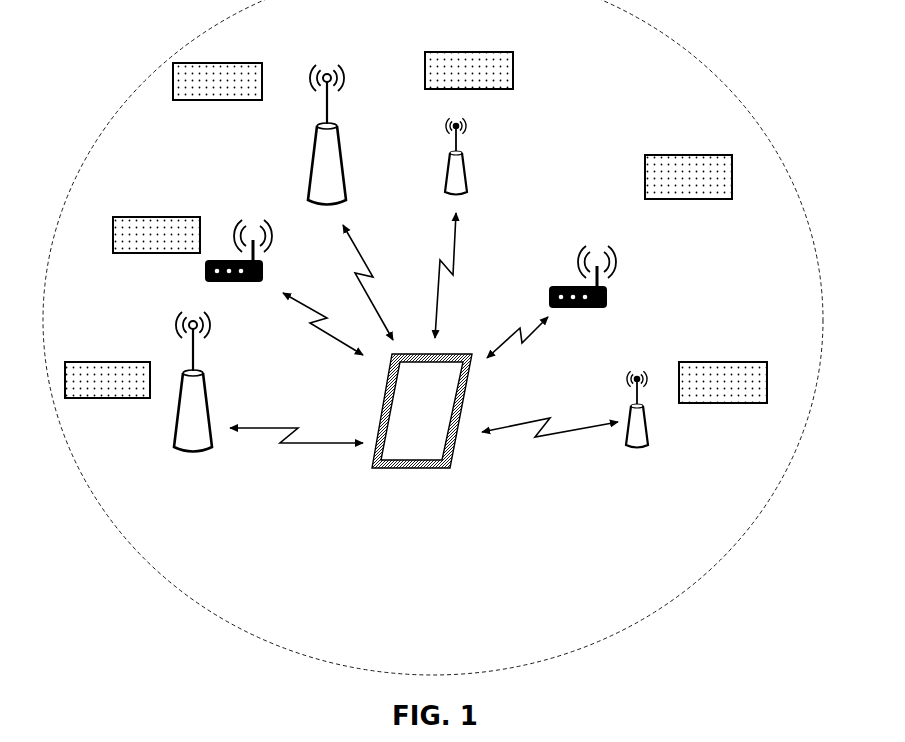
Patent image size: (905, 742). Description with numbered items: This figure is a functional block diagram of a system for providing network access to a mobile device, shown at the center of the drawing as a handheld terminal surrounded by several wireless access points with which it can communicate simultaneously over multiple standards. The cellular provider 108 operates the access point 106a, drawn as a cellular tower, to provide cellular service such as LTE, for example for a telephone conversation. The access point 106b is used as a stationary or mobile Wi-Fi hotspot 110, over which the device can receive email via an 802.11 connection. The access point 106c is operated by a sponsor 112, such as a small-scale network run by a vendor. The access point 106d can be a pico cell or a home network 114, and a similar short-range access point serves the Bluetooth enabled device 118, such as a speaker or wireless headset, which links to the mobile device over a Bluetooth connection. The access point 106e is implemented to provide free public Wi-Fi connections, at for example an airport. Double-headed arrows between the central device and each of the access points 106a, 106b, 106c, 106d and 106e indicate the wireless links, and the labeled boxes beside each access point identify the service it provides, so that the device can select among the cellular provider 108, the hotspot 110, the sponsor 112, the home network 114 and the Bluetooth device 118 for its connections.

The access point 106a is at (201, 415).
The access point 106b is at (263, 261).
The access point 106c is at (333, 167).
The access point 106d is at (459, 181).
The access point 106e is at (617, 258).
The cellular provider 108 is at (96, 362).
The Wi-Fi hotspot 110 is at (147, 217).
The sponsor 112 is at (208, 63).
The home network 114 is at (485, 52).
The Bluetooth enabled device 118 is at (740, 362).